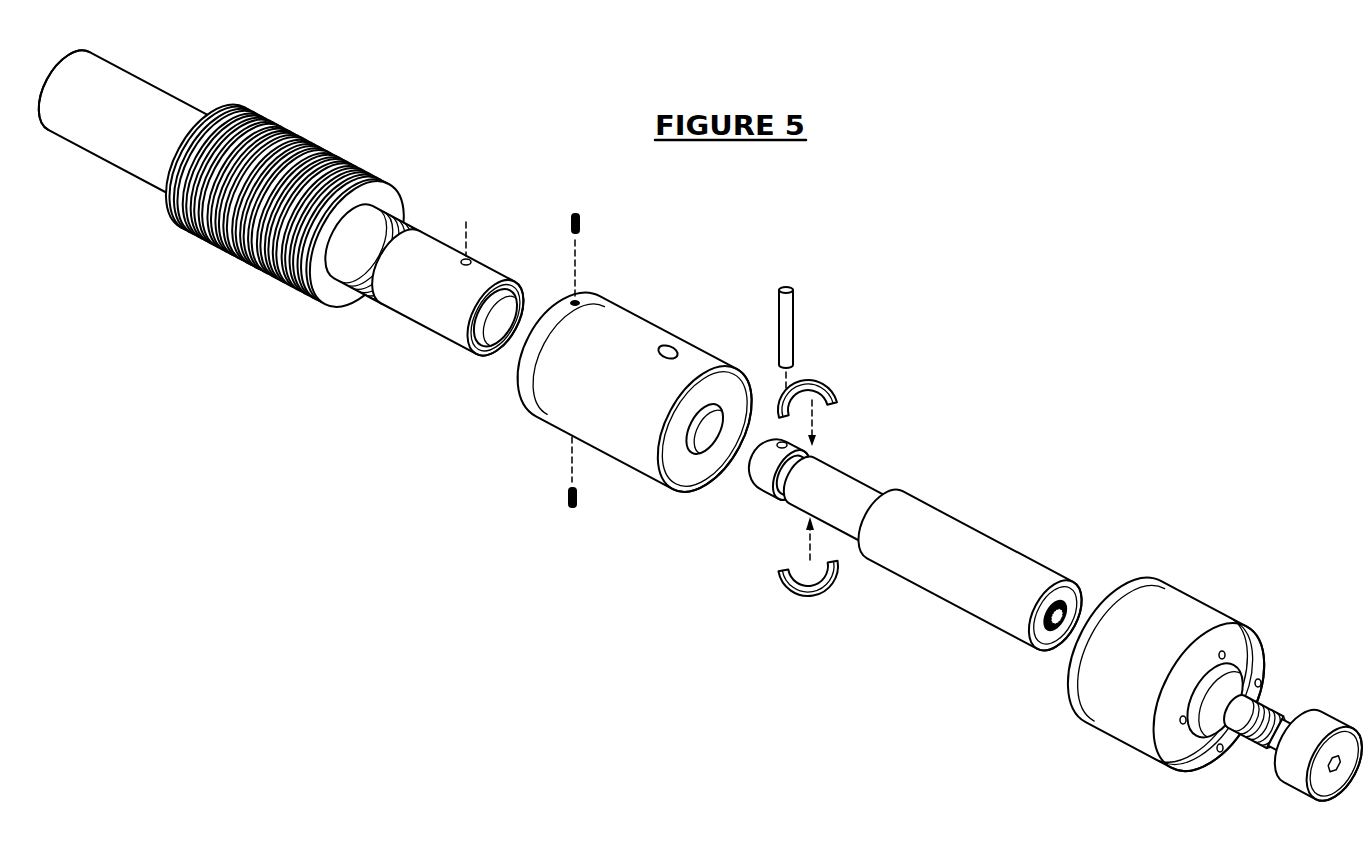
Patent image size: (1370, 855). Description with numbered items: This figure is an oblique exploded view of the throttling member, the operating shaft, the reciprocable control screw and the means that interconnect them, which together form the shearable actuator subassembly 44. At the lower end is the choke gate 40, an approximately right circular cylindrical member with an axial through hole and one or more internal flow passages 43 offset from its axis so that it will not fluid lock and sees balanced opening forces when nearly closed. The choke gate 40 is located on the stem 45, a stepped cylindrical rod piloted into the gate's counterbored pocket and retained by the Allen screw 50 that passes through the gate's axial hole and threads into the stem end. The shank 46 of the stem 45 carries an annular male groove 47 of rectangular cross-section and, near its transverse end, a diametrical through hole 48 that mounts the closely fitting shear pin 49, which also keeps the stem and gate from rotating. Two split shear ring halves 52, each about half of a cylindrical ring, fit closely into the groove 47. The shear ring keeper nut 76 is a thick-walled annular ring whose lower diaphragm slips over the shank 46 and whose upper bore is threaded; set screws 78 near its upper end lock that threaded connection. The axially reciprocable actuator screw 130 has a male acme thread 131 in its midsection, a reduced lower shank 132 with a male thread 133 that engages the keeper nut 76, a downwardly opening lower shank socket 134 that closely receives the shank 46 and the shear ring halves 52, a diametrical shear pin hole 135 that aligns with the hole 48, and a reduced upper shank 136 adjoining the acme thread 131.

The choke gate 40 is at (1183, 597).
The internal flow passages 43 is at (1223, 653).
The shearable actuator subassembly 44 is at (280, 246).
The stem 45 is at (967, 523).
The shank 46 is at (870, 480).
The annular male groove 47 is at (817, 458).
The diametrical through hole 48 is at (780, 478).
The shear pin 49 is at (793, 302).
The Allen screw 50 is at (1337, 720).
The split shear ring halves 52 is at (820, 377).
The shear ring keeper nut 76 is at (645, 320).
The set screws 78 is at (585, 212).
The axially reciprocable actuator screw 130 is at (165, 90).
The male acme thread 131 is at (337, 160).
The lower shank 132 is at (410, 323).
The male thread 133 is at (370, 297).
The lower shank socket 134 is at (490, 303).
The shear pin hole 135 is at (467, 258).
The upper shank 136 is at (128, 170).